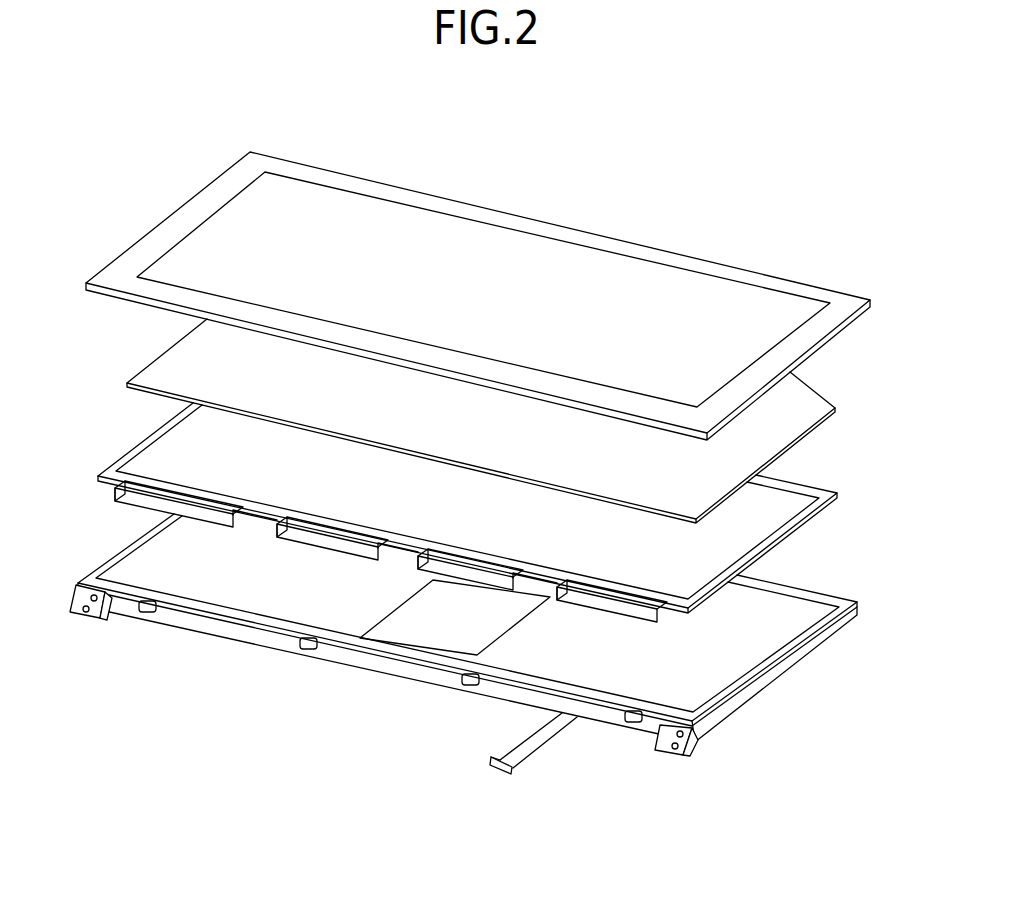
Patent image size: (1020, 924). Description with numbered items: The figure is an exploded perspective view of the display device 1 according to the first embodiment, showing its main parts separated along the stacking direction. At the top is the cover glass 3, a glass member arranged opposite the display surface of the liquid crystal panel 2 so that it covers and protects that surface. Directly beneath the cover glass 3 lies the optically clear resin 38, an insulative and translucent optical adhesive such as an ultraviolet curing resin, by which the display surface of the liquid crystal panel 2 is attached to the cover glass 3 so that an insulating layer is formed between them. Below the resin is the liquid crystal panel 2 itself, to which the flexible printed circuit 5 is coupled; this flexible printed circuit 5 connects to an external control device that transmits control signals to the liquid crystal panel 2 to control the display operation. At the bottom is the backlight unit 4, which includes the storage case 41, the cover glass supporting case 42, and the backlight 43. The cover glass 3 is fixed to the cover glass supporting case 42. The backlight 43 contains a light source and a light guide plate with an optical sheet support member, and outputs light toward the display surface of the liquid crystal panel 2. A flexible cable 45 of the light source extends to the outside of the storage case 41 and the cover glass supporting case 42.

The display device 1 is at (655, 201).
The liquid crystal panel 2 is at (832, 477).
The cover glass 3 is at (838, 271).
The optically clear resin 38 is at (814, 410).
The backlight unit 4 is at (846, 585).
The storage case 41 is at (778, 672).
The cover glass supporting case 42 is at (816, 636).
The backlight 43 is at (705, 687).
The flexible printed circuit 5 is at (453, 614).
The flexible cable 45 is at (540, 742).